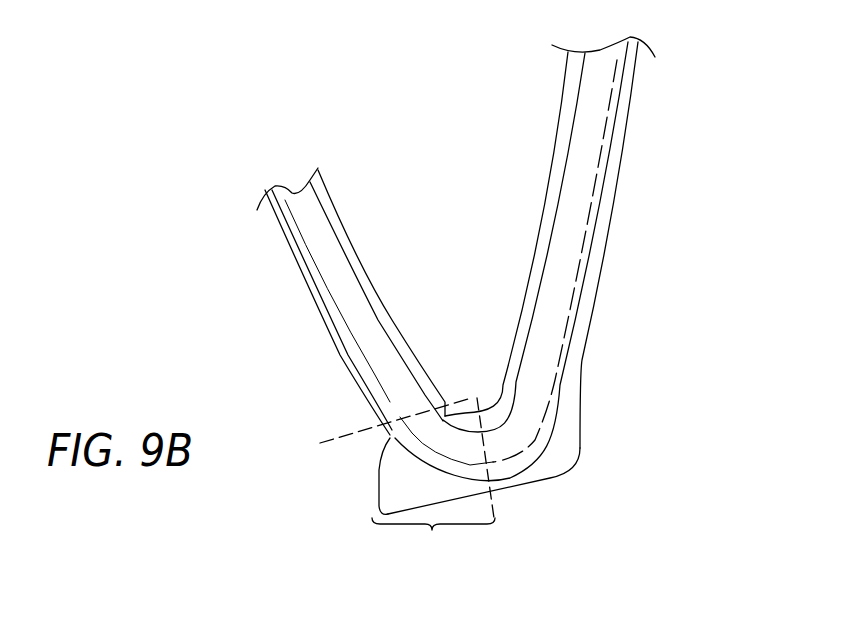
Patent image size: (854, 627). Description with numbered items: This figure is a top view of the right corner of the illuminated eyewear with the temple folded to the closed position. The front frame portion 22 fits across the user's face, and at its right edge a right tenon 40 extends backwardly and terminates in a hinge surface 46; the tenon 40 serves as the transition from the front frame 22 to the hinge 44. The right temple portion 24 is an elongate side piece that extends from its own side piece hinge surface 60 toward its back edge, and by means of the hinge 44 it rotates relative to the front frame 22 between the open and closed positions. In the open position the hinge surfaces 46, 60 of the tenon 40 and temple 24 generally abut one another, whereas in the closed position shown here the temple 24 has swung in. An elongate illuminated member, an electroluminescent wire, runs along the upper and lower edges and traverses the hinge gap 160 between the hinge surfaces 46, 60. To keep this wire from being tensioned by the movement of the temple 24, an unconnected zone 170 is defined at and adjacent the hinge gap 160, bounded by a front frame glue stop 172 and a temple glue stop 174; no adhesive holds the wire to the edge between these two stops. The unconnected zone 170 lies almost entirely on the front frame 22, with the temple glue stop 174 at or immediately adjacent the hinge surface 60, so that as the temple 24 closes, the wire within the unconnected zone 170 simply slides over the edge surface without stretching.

The front frame portion 22 is at (607, 255).
The right temple portion 24 is at (330, 212).
The right tenon 40 is at (523, 485).
The hinge 44 is at (431, 322).
The hinge surface 46 is at (380, 492).
The side piece hinge surface 60 is at (385, 437).
The hinge gap 160 is at (384, 443).
The unconnected zone 170 is at (433, 537).
The front frame glue stop 172 is at (494, 505).
The temple glue stop 174 is at (450, 400).